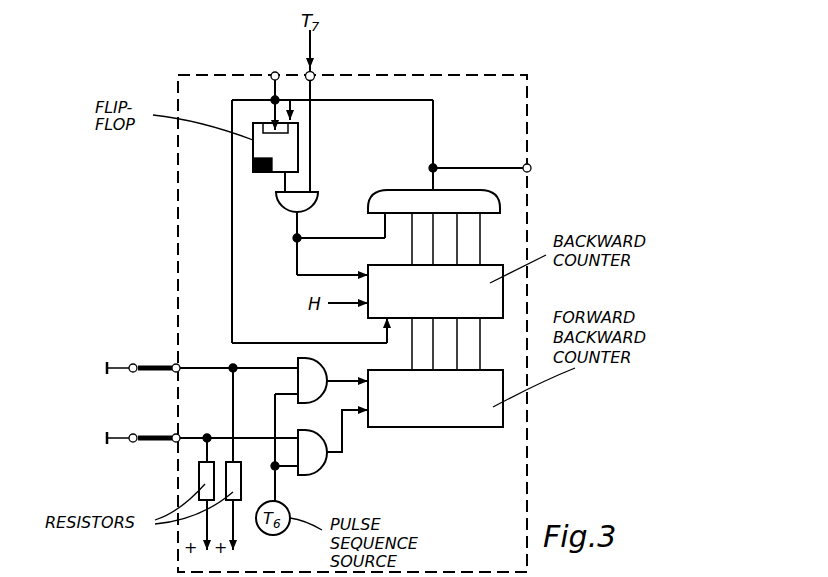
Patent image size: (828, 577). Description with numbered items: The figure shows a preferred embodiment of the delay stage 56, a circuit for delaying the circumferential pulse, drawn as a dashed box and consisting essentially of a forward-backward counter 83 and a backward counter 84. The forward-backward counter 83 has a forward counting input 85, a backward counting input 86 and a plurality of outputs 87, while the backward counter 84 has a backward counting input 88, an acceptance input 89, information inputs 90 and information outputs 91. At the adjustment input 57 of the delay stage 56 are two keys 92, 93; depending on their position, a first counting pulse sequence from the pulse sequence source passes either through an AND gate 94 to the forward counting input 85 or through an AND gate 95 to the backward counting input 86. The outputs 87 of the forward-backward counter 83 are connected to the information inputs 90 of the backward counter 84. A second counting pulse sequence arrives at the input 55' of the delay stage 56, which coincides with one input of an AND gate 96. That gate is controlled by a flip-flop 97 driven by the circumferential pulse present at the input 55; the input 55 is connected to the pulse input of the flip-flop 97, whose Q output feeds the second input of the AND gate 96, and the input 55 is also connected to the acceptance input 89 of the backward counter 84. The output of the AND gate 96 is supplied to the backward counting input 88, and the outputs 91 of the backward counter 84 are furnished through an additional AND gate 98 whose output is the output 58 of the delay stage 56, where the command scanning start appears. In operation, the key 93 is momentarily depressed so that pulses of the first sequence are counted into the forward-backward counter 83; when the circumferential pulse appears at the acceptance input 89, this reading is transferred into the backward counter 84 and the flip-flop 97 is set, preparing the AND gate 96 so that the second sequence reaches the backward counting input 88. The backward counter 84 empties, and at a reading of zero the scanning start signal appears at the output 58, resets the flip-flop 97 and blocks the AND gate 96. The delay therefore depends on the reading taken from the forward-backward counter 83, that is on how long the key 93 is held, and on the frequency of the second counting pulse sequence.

The input 55 is at (253, 79).
The input 55' is at (338, 55).
The delay stage 56 is at (508, 448).
The adjustment input 57 is at (173, 433).
The output 58 is at (532, 164).
The forward-backward counter 83 is at (428, 413).
The backward counter 84 is at (485, 312).
The forward counting input 85 is at (365, 418).
The backward counting input 86 is at (360, 384).
The outputs 87 is at (433, 367).
The backward counting input 88 is at (360, 272).
The acceptance input 89 is at (383, 321).
The information inputs 90 is at (443, 325).
The information outputs 91 is at (445, 262).
The key 92 is at (152, 366).
The key 93 is at (150, 442).
The AND gate 94 is at (320, 466).
The AND gate 95 is at (307, 382).
The AND gate 96 is at (313, 203).
The flip-flop 97 is at (285, 163).
The AND gate 98 is at (397, 203).